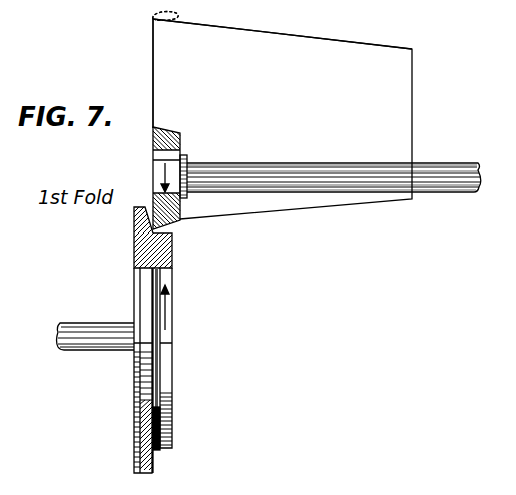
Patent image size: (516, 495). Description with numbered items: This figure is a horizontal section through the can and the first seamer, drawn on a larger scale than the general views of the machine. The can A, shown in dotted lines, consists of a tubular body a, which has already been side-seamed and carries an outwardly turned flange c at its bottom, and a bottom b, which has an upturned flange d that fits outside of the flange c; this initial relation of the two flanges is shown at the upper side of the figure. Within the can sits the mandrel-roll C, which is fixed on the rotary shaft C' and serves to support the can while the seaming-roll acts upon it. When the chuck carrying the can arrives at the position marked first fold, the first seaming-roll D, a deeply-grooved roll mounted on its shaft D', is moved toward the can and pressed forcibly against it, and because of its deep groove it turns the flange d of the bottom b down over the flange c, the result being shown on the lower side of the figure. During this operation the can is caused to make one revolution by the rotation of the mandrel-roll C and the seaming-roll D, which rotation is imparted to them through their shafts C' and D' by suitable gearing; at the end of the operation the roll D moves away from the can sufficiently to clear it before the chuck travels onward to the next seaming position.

The can A is at (282, 119).
The body a is at (282, 37).
The bottom b is at (159, 73).
The flange c is at (167, 18).
The flange d is at (183, 16).
The mandrel-roll C is at (181, 177).
The rotary shaft C' is at (334, 170).
The first seaming-roll D is at (162, 340).
The shaft D' is at (96, 324).